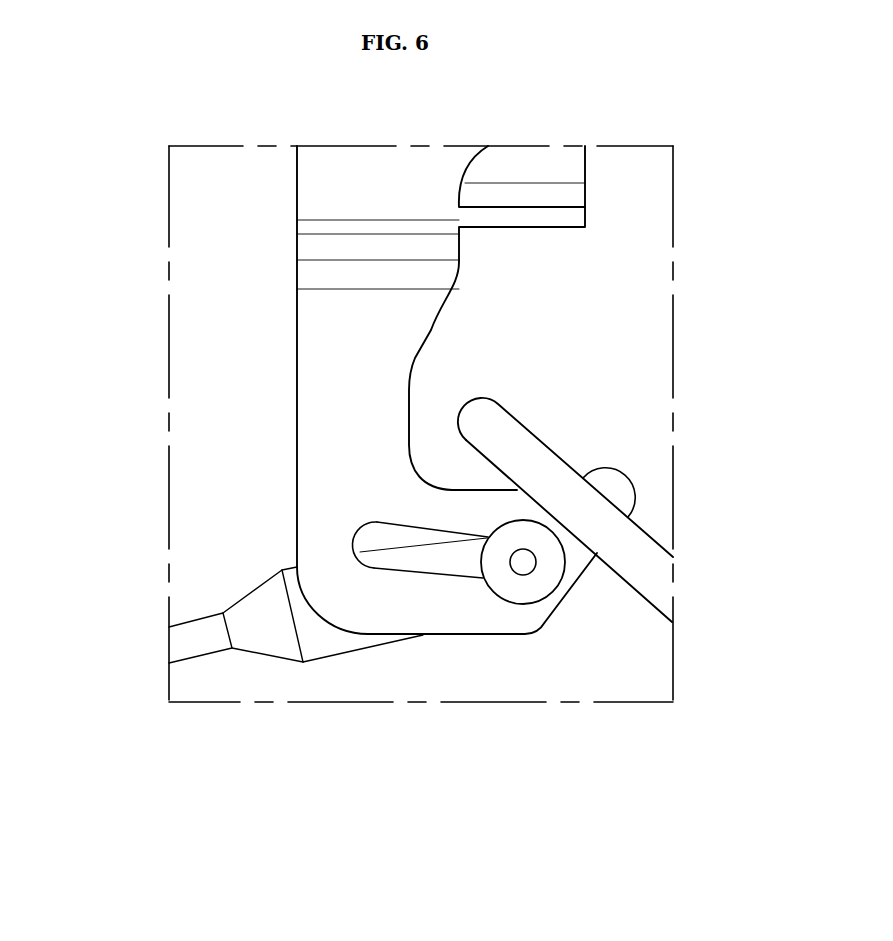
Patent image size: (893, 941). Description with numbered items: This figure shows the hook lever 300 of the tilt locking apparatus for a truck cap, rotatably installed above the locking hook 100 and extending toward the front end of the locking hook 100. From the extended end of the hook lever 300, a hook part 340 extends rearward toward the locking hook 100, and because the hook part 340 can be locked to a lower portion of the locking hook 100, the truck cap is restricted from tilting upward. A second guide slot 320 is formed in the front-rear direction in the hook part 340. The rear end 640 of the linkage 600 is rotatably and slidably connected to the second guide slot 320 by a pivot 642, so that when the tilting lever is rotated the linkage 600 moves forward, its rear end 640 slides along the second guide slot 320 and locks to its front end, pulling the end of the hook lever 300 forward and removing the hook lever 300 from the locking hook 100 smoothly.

The locking hook 100 is at (628, 548).
The hook lever 300 is at (335, 373).
The second guide slot 320 is at (425, 558).
The hook part 340 is at (608, 490).
The linkage 600 is at (198, 638).
The rear end of the linkage 640 is at (319, 640).
The pivot 642 is at (523, 562).